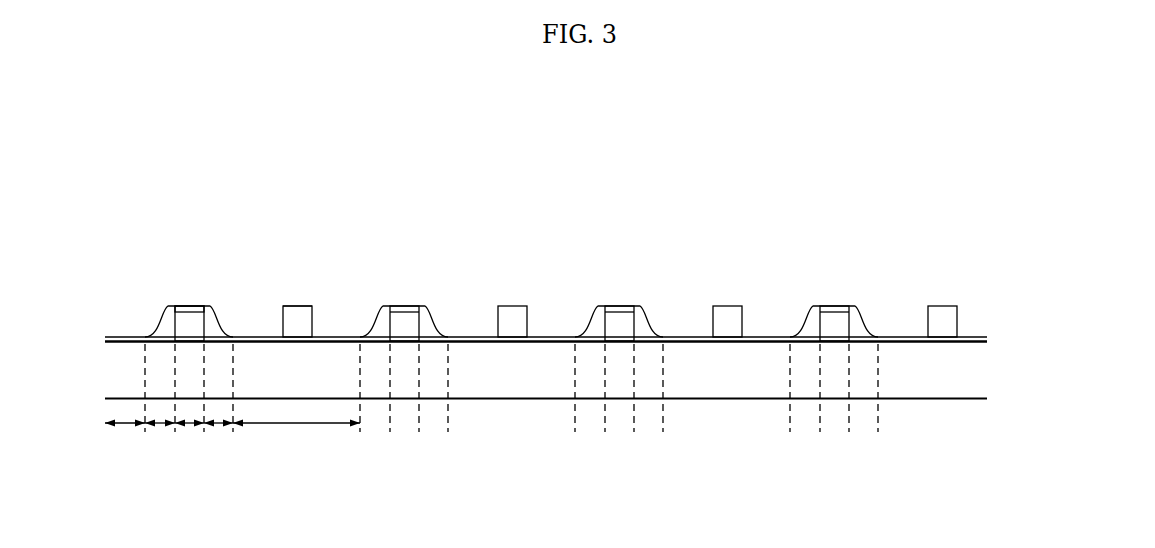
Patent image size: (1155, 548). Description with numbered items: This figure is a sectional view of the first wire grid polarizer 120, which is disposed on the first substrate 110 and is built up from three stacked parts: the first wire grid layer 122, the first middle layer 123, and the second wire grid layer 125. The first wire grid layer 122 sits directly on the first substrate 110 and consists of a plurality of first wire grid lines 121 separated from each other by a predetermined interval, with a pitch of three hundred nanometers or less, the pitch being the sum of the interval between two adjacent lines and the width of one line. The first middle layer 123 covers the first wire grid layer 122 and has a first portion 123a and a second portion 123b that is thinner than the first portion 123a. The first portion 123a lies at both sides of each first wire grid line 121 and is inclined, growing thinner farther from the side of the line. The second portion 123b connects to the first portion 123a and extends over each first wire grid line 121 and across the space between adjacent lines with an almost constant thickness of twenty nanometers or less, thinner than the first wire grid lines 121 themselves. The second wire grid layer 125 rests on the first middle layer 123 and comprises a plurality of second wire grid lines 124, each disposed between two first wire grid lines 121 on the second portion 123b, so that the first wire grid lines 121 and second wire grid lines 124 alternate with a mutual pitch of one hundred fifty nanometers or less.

The first substrate 110 is at (918, 390).
The first wire grid polarizer 120 is at (985, 323).
The first wire grid lines 121 is at (177, 326).
The first wire grid layer 122 is at (187, 305).
The first middle layer 123 is at (219, 313).
The first portion 123a is at (160, 428).
The second portion 123b is at (123, 428).
The second wire grid lines 124 is at (292, 313).
The second wire grid layer 125 is at (316, 305).